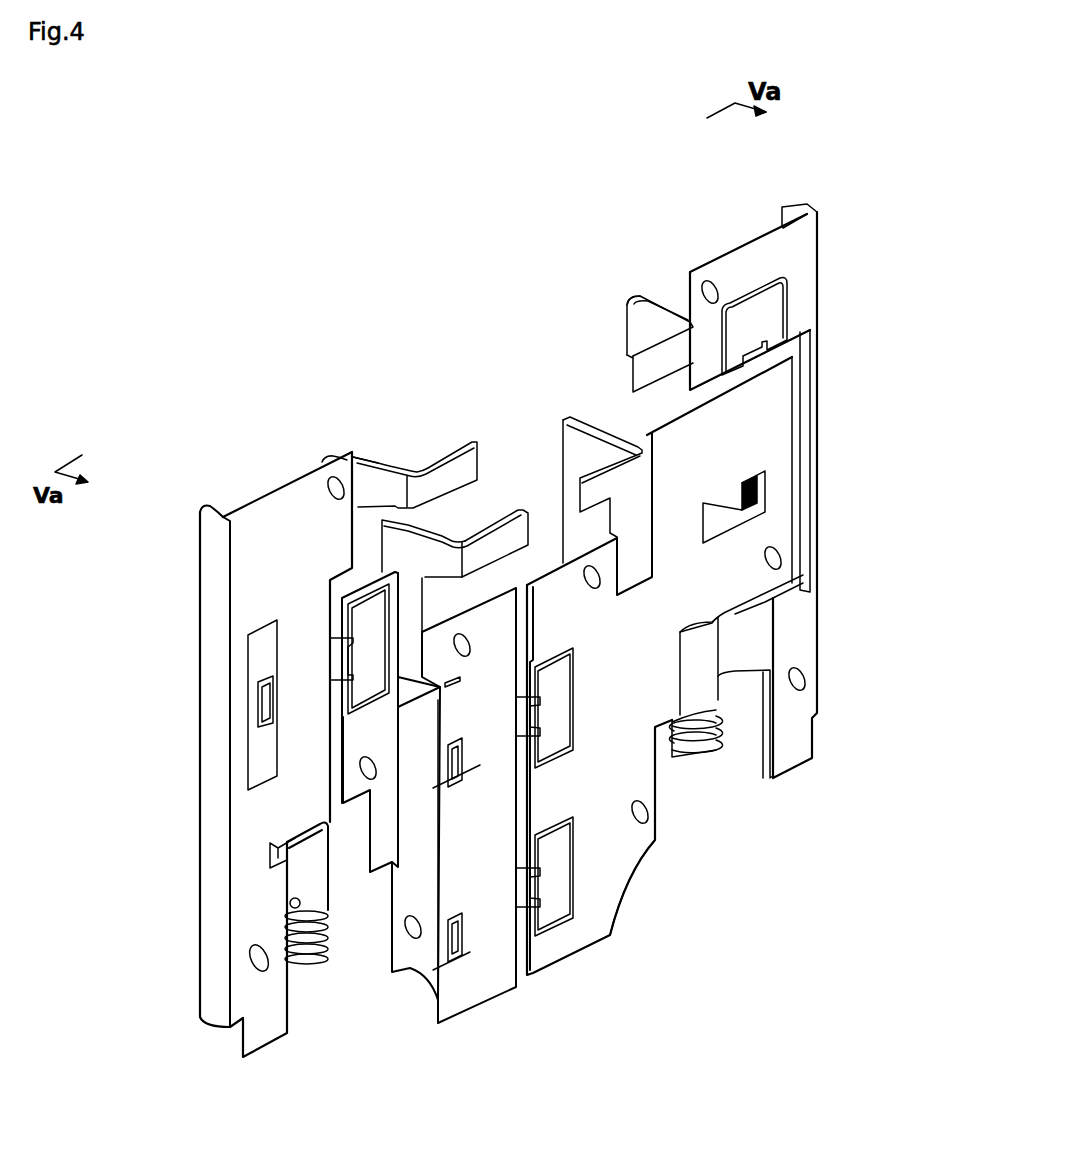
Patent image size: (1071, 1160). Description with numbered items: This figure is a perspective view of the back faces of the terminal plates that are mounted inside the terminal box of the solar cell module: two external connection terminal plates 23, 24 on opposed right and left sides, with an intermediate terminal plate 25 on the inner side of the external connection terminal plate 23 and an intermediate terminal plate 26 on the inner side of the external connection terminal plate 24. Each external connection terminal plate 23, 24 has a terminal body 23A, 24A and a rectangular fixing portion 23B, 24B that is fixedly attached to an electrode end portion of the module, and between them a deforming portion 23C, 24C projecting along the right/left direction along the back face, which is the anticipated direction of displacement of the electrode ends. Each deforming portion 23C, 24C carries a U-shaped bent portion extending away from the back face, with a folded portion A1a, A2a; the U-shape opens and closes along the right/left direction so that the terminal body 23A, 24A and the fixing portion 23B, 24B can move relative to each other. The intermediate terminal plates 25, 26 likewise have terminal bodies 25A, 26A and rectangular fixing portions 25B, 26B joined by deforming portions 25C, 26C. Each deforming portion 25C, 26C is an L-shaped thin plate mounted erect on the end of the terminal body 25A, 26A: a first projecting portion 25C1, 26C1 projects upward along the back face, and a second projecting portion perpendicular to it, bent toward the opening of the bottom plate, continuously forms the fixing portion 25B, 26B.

The external connection terminal plate 23 is at (796, 249).
The terminal body 23A is at (805, 627).
The fixing portion 23B is at (630, 372).
The deforming portion 23C is at (640, 332).
The folded portion A1a is at (630, 297).
The external connection terminal plate 24 is at (199, 557).
The terminal body 24A is at (253, 817).
The fixing portion 24B is at (447, 447).
The deforming portion 24C is at (371, 458).
The folded portion A2a is at (323, 460).
The intermediate terminal plate 25 is at (622, 772).
The terminal body 25A is at (608, 867).
The fixing portion 25B is at (627, 475).
The deforming portion 25C is at (620, 450).
The first projecting portion 25C1 is at (585, 530).
The intermediate terminal plate 26 is at (479, 976).
The terminal body 26A is at (483, 800).
The fixing portion 26B is at (503, 543).
The deforming portion 26C is at (438, 550).
The first projecting portion 26C1 is at (407, 615).